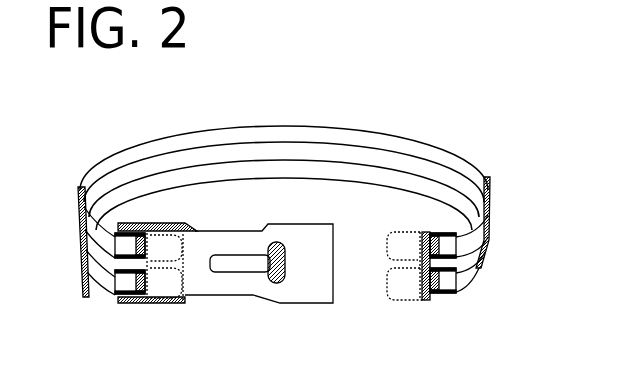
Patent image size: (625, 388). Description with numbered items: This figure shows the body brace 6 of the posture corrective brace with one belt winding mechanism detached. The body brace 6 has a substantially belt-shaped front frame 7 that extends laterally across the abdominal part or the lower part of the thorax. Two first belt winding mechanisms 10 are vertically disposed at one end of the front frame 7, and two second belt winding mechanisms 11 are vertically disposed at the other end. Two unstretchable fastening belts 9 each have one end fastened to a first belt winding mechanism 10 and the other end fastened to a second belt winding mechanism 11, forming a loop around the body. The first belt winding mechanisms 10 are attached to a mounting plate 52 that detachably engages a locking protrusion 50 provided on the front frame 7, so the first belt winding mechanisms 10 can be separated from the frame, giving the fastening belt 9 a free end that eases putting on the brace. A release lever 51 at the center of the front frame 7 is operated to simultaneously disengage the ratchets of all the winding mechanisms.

The body brace 6 is at (303, 186).
The front frame 7 is at (259, 271).
The fastening belt 9 is at (132, 143).
The first belt winding mechanism 10 is at (432, 273).
The second belt winding mechanism 11 is at (145, 223).
The locking protrusion 50 is at (273, 282).
The release lever 51 is at (226, 268).
The mounting plate 52 is at (417, 294).